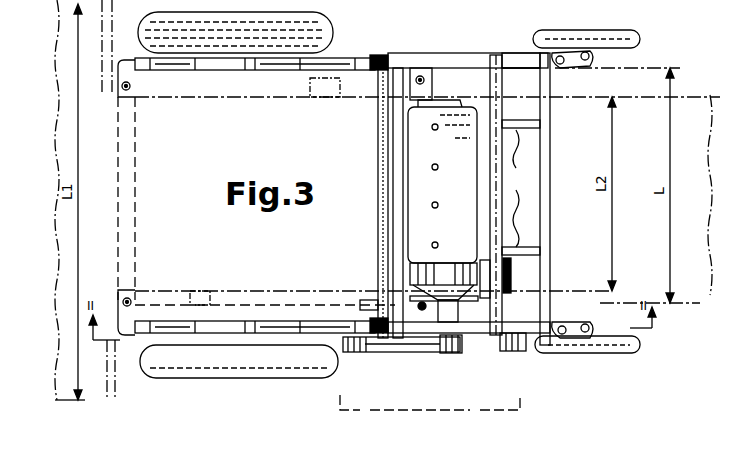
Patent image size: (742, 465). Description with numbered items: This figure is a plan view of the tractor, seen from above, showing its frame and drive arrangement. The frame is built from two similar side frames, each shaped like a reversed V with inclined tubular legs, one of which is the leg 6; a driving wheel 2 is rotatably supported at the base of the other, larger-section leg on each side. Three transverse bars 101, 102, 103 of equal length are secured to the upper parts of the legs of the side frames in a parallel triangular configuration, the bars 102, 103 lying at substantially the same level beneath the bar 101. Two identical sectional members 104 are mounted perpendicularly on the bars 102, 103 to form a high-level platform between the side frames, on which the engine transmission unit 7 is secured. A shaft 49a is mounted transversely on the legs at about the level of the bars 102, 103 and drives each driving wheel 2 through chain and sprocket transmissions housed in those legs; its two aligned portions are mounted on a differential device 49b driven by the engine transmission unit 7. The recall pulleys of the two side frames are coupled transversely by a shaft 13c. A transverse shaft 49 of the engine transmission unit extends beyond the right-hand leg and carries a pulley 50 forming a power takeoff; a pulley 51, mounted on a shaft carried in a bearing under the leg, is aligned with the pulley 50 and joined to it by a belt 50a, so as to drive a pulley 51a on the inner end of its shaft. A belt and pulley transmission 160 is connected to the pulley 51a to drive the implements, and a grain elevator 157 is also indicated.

The driving wheel 2 is at (334, 32).
The leg 6 is at (520, 54).
The engine transmission unit 7 is at (449, 211).
The shaft 13c is at (385, 224).
The transverse shaft 49 is at (448, 353).
The shaft 49a is at (492, 85).
The differential device 49b is at (506, 266).
The pulley 50 is at (470, 352).
The belt 50a is at (413, 352).
The pulley 51 is at (380, 352).
The pulley 51a is at (366, 302).
The bar 101 is at (502, 82).
The bar 102 is at (398, 148).
The bar 103 is at (546, 144).
The sectional member 104 is at (521, 188).
The grain elevator 157 is at (318, 96).
The belt and pulley transmission 160 is at (205, 300).